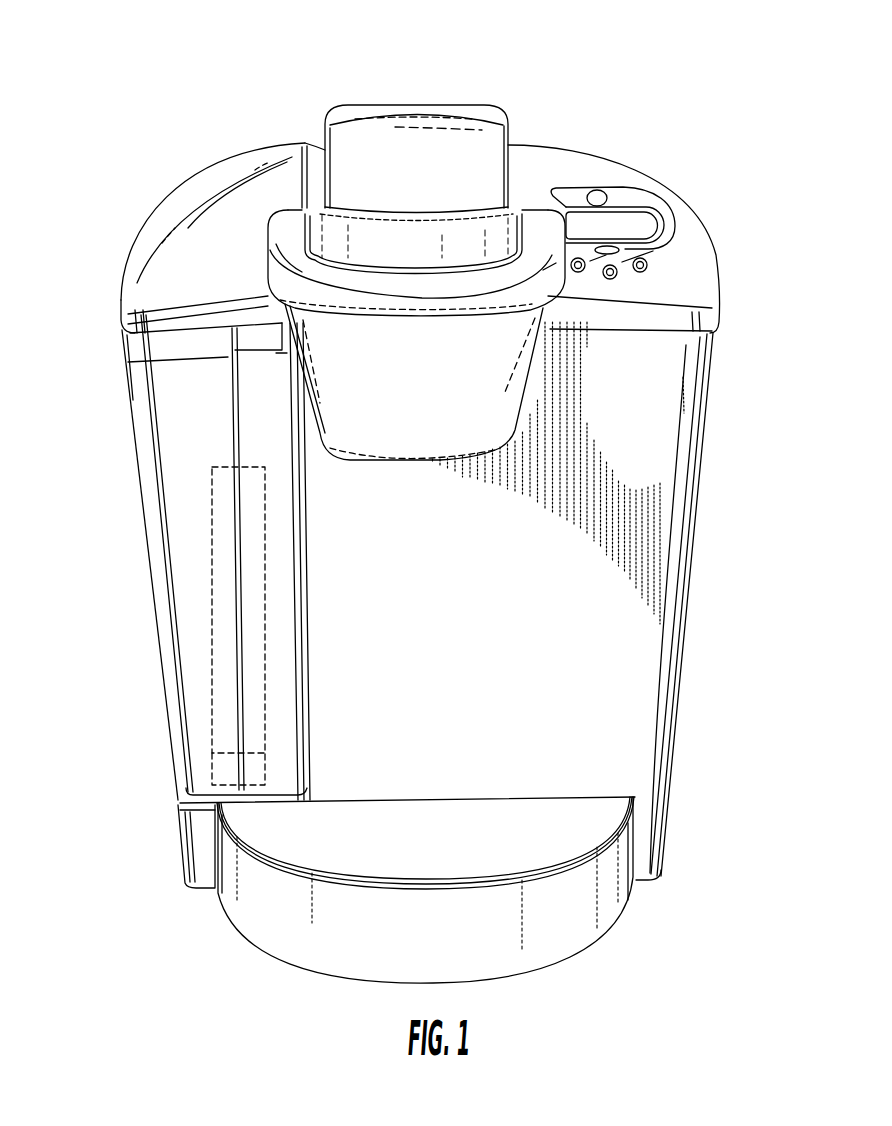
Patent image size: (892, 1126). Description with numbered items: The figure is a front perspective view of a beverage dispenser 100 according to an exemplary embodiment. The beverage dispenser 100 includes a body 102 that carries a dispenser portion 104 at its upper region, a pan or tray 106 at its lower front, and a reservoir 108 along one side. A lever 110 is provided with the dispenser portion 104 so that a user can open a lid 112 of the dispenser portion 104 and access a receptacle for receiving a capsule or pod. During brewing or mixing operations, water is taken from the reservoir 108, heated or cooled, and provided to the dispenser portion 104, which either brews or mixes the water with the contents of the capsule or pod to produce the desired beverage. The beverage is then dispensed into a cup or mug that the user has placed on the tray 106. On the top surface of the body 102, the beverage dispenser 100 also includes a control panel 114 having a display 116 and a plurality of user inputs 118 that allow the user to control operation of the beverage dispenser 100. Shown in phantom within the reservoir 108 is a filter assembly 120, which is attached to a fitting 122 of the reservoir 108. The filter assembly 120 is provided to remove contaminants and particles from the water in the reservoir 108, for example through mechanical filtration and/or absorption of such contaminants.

The beverage dispenser 100 is at (128, 122).
The body 102 is at (662, 434).
The dispenser portion 104 is at (446, 136).
The tray 106 is at (607, 878).
The reservoir 108 is at (174, 538).
The lever 110 is at (513, 290).
The lid 112 is at (363, 233).
The control panel 114 is at (742, 146).
The display 116 is at (634, 220).
The user inputs 118 is at (648, 266).
The filter assembly 120 is at (208, 660).
The fitting 122 is at (208, 770).